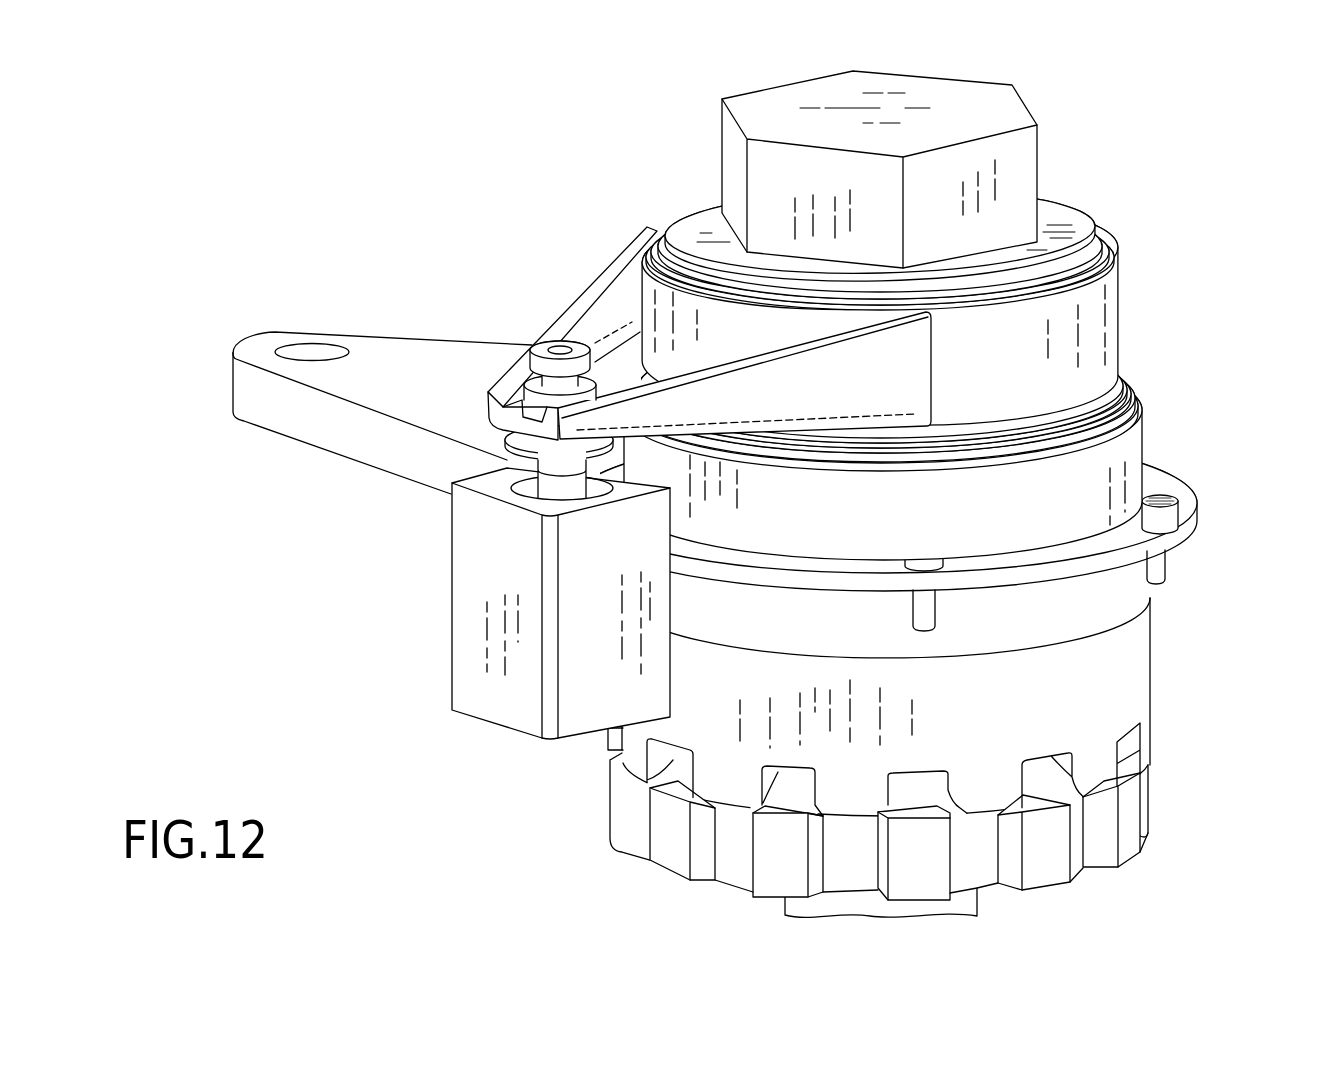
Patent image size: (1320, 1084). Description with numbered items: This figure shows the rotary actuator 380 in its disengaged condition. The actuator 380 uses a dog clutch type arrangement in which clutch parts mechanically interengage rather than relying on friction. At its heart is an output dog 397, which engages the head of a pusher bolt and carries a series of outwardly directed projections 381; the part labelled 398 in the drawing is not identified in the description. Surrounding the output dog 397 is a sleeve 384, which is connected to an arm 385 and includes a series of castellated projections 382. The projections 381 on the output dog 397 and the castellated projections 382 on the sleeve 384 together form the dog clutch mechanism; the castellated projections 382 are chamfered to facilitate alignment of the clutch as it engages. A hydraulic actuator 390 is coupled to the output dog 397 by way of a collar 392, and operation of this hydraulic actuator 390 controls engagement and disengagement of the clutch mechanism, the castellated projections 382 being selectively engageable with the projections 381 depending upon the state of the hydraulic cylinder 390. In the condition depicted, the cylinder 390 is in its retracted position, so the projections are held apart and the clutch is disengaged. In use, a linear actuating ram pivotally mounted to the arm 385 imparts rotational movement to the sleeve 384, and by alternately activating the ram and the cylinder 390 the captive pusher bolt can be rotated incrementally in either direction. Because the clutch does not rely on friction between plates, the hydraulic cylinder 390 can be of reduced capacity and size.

The actuator 380 is at (1143, 149).
The outwardly directed projections 381 is at (668, 848).
The castellated projections 382 is at (1093, 765).
The sleeve 384 is at (1045, 668).
The arm 385 is at (404, 341).
The hydraulic actuator 390 is at (466, 565).
The collar 392 is at (590, 297).
The output dog 397 is at (687, 217).
The hex nut 398 is at (738, 133).